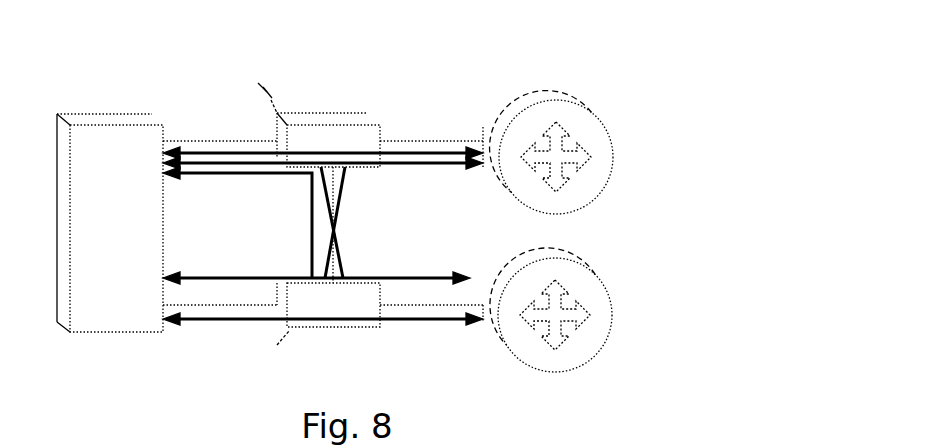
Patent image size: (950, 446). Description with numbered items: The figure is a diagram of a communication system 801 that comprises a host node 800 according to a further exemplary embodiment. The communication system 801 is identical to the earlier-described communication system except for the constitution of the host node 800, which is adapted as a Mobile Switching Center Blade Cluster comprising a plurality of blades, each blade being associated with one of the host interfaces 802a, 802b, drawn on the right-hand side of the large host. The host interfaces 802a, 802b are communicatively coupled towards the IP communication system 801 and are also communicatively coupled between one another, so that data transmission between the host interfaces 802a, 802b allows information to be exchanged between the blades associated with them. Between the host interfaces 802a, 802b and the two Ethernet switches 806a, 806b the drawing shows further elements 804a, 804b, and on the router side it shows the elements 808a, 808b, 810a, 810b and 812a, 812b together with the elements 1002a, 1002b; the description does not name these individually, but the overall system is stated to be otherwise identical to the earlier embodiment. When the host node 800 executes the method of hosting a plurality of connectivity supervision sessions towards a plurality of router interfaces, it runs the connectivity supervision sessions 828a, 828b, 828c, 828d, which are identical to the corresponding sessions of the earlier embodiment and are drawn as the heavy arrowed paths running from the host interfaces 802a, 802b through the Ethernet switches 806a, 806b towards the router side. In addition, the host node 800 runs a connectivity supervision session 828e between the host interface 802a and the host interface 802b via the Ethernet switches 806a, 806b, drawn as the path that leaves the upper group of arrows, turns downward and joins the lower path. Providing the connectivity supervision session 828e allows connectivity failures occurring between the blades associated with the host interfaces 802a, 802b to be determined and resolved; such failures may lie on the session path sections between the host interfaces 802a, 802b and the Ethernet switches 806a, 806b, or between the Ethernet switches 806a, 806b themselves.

The host node 800 is at (63, 110).
The communication system 801 is at (604, 60).
The host interface 802a is at (165, 122).
The host interface 802b is at (163, 324).
The link from host to first Ethernet switch 804a is at (203, 127).
The link from host to second Ethernet switch 804b is at (197, 323).
The Ethernet switch 806a is at (322, 113).
The Ethernet switch 806b is at (333, 330).
The first router 808a is at (557, 87).
The second router 808b is at (545, 390).
The first router interface IP_R 810a is at (483, 135).
The second router interface IP_S 810b is at (485, 322).
The link from first switch to first router 812a is at (455, 135).
The link from second switch to second router 812b is at (461, 303).
The connectivity supervision session 828a is at (413, 152).
The connectivity supervision session 828b is at (408, 276).
The connectivity supervision session 828c is at (397, 166).
The connectivity supervision session 828d is at (390, 325).
The connectivity supervision session 828e is at (307, 210).
The first connection group 1002a is at (198, 441).
The second connection group 1002b is at (487, 441).